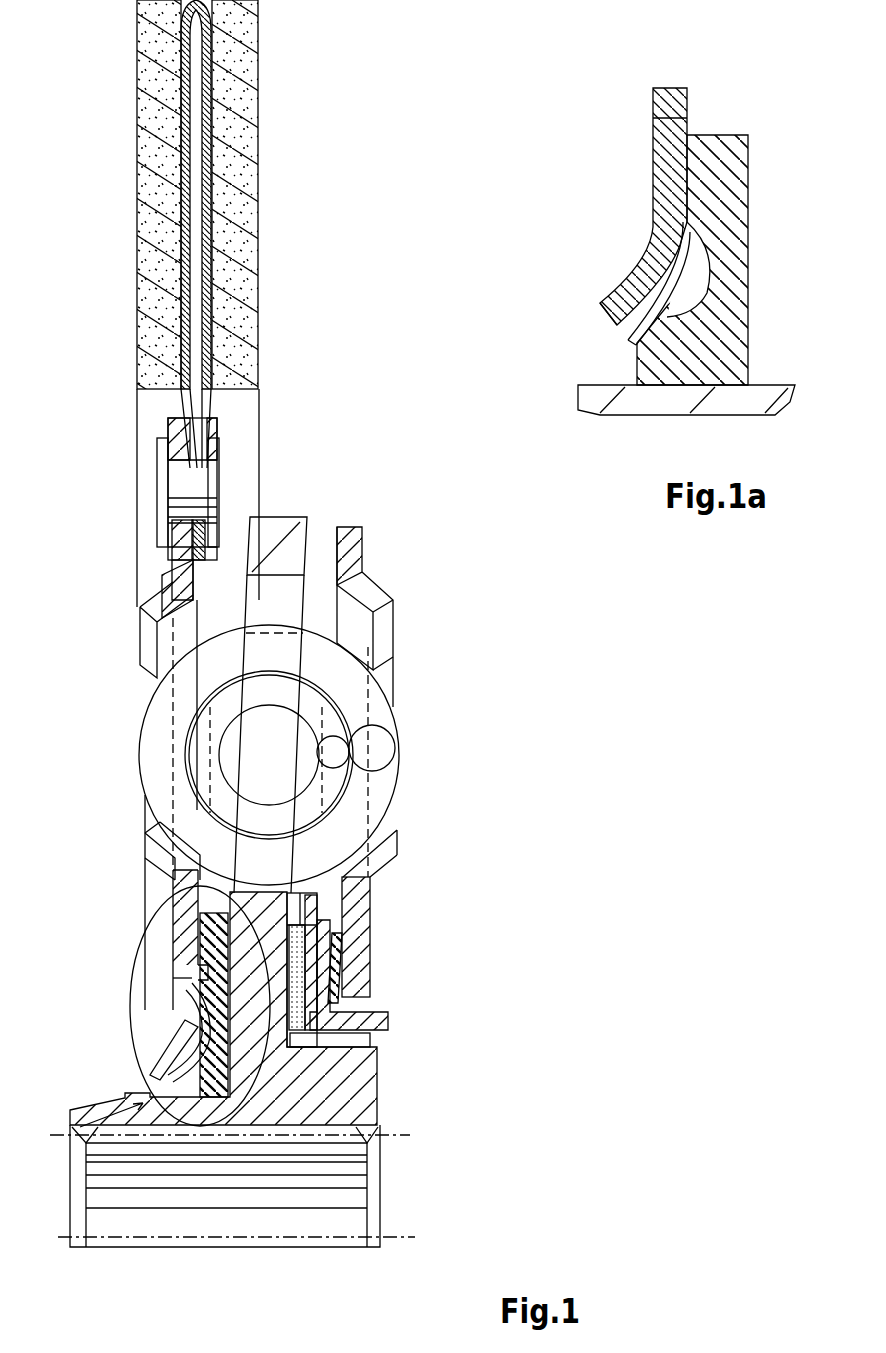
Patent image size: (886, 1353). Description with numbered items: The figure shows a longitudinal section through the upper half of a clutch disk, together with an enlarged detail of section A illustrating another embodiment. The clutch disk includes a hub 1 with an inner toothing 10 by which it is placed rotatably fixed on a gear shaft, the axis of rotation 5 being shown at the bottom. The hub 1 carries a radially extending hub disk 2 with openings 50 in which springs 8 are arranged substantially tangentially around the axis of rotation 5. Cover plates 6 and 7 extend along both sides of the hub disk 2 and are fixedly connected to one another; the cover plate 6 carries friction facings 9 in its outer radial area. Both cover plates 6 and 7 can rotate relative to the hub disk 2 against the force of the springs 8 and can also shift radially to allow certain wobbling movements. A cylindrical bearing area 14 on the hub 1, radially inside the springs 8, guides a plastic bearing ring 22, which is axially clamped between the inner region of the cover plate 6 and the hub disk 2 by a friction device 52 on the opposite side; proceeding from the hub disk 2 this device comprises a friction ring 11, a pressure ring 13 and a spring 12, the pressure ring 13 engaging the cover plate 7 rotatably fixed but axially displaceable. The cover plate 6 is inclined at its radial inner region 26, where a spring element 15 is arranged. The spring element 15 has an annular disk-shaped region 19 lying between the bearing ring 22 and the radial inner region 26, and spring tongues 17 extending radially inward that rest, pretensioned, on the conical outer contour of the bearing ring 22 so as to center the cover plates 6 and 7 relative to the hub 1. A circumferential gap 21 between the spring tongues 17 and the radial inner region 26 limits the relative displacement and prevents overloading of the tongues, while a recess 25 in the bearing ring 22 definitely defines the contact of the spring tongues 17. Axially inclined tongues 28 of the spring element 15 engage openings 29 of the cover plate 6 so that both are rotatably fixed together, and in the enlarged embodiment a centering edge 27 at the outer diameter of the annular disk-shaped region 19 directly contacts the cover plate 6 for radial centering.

In FIG. 1, the hub 1 is at (367, 1083).
In FIG. 1, the hub disk 2 is at (280, 528).
In FIG. 1, the axis of rotation 5 is at (415, 1237).
In FIG. 1, the cover plate 6 is at (182, 575).
In FIG. 1, the cover plate 7 is at (353, 565).
In FIG. 1, the springs 8 is at (388, 722).
In FIG. 1, the friction facings 9 is at (247, 137).
In FIG. 1, the inner toothing 10 is at (367, 1150).
In FIG. 1, the friction ring 11 is at (300, 973).
In FIG. 1, the spring 12 is at (385, 949).
In FIG. 1, the pressure ring 13 is at (380, 1022).
In FIG. 1, the cylindrical bearing area 14 is at (87, 1140).
In FIG. 1, the spring element 15 is at (183, 1030).
In FIG. 1A, the spring element 15 is at (690, 250).
In FIG. 1A, the spring tongues 17 is at (637, 345).
In FIG. 1A, the annular disk-shaped region 19 is at (668, 165).
In FIG. 1A, the gap 21 is at (630, 327).
In FIG. 1, the bearing ring 22 is at (197, 1078).
In FIG. 1A, the bearing ring 22 is at (735, 357).
In FIG. 1, the recess 25 is at (152, 1060).
In FIG. 1A, the recess 25 is at (700, 285).
In FIG. 1A, the radial inner region 26 is at (618, 290).
In FIG. 1A, the centering edge 27 is at (672, 118).
In FIG. 1, the axially inclined tongues 28 is at (175, 980).
In FIG. 1, the openings 29 is at (180, 998).
In FIG. 1, the openings 50 is at (292, 592).
In FIG. 1, the friction device 52 is at (407, 962).
In FIG. 1, the section A is at (147, 930).